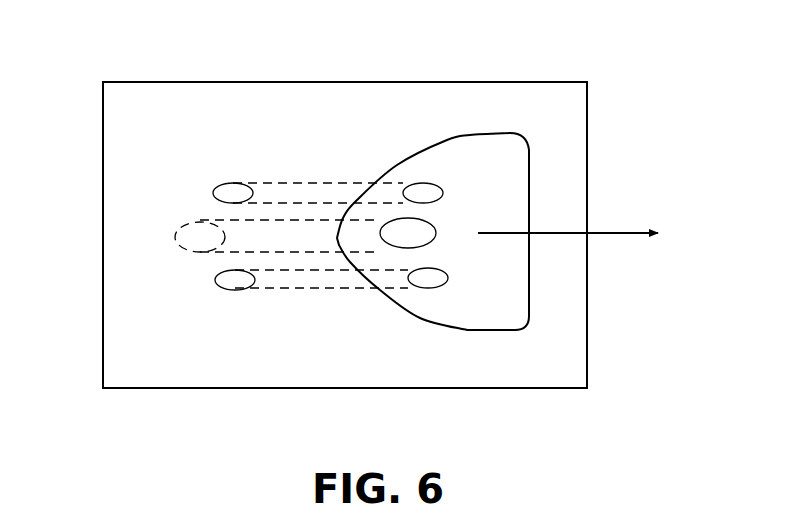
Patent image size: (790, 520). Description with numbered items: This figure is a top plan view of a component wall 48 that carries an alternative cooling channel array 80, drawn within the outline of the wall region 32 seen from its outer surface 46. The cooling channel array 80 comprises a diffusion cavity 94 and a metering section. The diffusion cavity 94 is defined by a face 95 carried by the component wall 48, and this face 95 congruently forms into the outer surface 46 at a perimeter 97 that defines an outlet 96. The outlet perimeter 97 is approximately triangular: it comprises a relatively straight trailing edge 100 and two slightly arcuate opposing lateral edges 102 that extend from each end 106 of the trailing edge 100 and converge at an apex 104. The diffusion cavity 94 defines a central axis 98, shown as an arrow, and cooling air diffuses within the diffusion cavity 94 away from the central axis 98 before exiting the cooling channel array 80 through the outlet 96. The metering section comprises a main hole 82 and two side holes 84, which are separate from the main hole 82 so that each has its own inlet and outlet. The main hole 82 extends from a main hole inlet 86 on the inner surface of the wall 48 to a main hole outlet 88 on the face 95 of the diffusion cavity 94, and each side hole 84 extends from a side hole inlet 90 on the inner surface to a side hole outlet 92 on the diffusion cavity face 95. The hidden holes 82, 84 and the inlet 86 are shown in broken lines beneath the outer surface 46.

The housing 32 is at (150, 357).
The outer surface 46 is at (222, 105).
The component wall 48 is at (587, 310).
The cooling channel array 80 is at (510, 185).
The main hole 82 is at (258, 250).
The side holes 84 is at (280, 183).
The main hole inlet 86 is at (183, 243).
The main hole outlet 88 is at (436, 240).
The side hole inlets 90 is at (222, 185).
The side hole outlets 92 is at (425, 183).
The diffusion cavity 94 is at (490, 318).
The diffusion cavity face 95 is at (517, 283).
The outlet 96 is at (510, 133).
The outlet perimeter 97 is at (528, 167).
The central axis 98 is at (587, 234).
The trailing edge 100 is at (528, 222).
The lateral edges 102 is at (475, 135).
The apex 104 is at (335, 237).
The trailing edge ends 106 is at (528, 140).